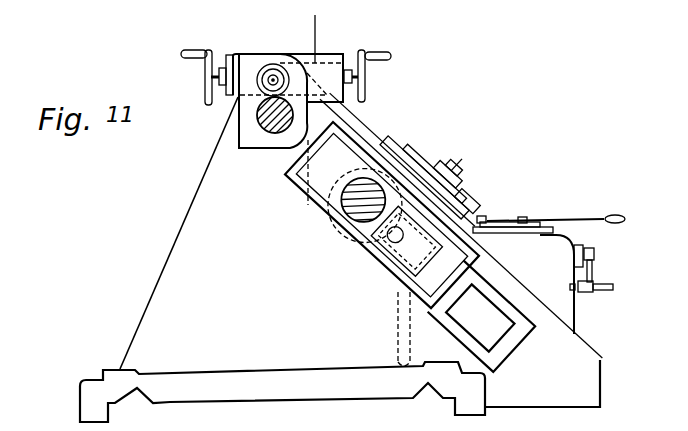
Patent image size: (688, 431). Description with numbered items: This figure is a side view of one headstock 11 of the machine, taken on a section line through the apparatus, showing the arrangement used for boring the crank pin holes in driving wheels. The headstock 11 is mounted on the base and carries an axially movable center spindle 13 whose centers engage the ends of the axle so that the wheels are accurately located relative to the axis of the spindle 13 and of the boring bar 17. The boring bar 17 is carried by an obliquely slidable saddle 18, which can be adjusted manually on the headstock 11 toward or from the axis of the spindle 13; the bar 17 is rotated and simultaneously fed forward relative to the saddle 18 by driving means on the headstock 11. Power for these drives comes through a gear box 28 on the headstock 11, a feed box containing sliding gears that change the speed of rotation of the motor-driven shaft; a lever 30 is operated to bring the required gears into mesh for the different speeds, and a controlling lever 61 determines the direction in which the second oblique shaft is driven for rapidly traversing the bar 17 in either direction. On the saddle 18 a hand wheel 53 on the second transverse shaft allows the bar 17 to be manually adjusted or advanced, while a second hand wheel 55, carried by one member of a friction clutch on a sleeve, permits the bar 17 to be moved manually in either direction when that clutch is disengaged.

The headstock 11 is at (222, 178).
The spindle 13 is at (280, 131).
The boring bar 17 is at (337, 211).
The saddle 18 is at (393, 280).
The gear box 28 is at (560, 304).
The lever 30 is at (588, 268).
The hand wheel 53 is at (443, 155).
The hand wheel 55 is at (467, 211).
The controlling lever 61 is at (567, 221).